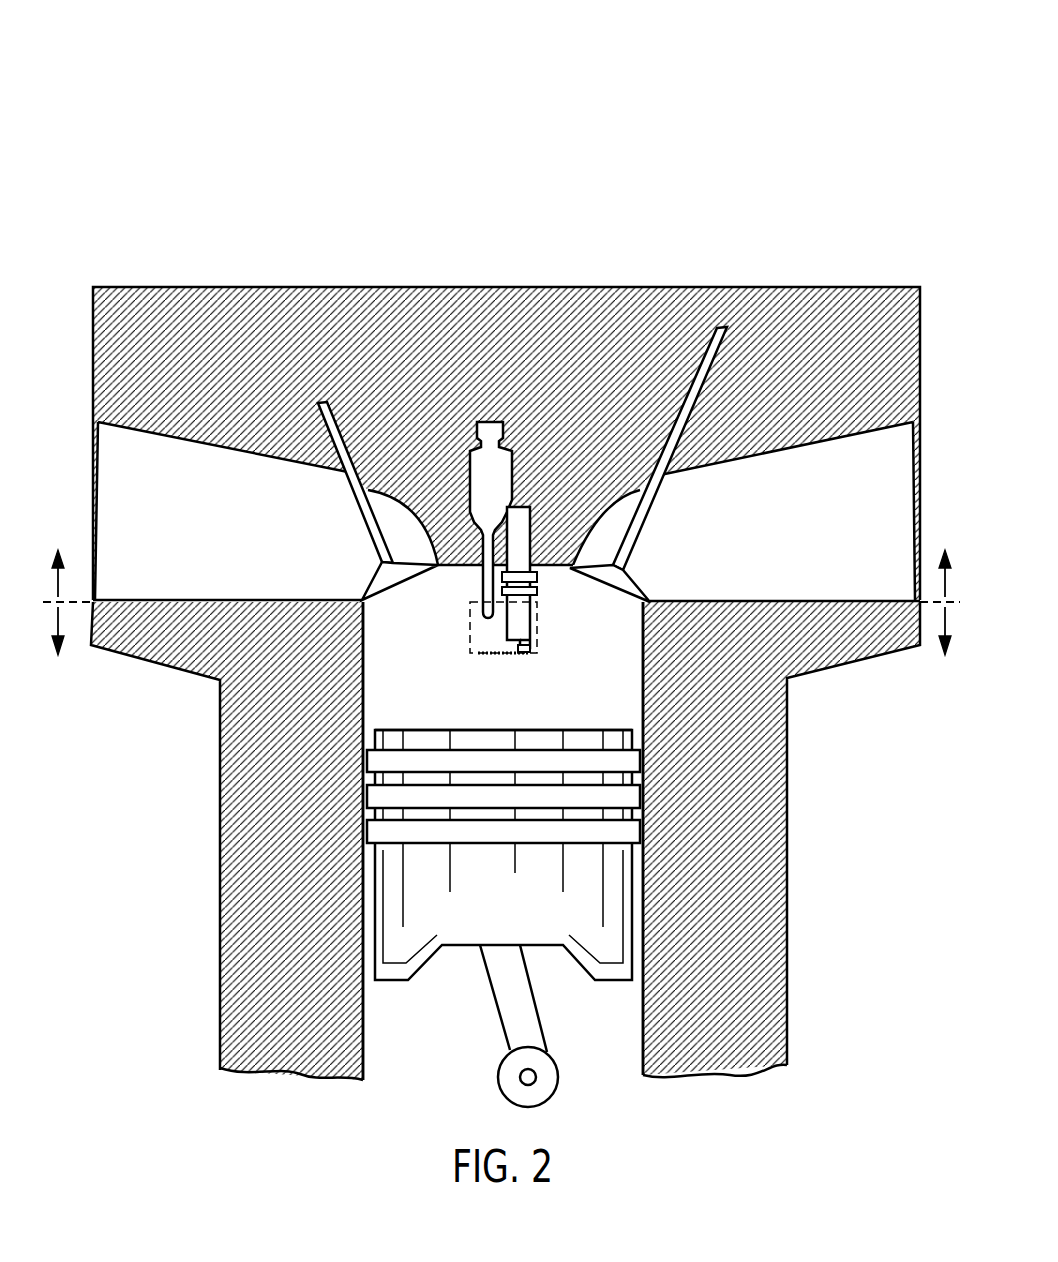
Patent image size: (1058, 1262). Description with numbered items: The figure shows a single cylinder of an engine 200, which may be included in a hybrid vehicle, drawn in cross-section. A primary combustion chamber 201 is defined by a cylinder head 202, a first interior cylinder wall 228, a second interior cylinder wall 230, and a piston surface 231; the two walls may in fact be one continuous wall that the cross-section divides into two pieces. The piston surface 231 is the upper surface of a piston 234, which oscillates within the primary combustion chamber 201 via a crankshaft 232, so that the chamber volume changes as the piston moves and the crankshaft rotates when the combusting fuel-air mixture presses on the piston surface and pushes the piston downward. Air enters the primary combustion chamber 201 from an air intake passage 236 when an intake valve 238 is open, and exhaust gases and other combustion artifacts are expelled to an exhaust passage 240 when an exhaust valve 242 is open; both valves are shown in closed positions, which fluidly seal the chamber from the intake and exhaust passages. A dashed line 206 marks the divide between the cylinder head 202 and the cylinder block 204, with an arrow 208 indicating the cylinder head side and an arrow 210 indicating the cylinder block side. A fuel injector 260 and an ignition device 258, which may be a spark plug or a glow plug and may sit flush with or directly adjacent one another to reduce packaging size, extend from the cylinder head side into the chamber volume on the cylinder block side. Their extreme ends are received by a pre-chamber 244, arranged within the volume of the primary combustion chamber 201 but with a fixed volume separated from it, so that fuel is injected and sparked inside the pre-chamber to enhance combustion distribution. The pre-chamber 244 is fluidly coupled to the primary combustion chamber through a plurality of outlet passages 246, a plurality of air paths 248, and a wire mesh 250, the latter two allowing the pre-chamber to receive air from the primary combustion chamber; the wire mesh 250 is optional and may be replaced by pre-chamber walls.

The engine 200 is at (834, 33).
The primary combustion chamber 201 is at (519, 720).
The cylinder head 202 is at (176, 287).
The cylinder block 204 is at (220, 857).
The dashed line 206 is at (80, 605).
The arrow 208 is at (60, 593).
The arrow 210 is at (60, 615).
The first interior cylinder wall 228 is at (365, 1070).
The second interior cylinder wall 230 is at (643, 1070).
The piston surface 231 is at (437, 728).
The crankshaft 232 is at (498, 1078).
The piston 234 is at (463, 947).
The air intake passage 236 is at (831, 547).
The intake valve 238 is at (641, 530).
The exhaust passage 240 is at (259, 537).
The exhaust valve 242 is at (356, 500).
The pre-chamber 244 is at (470, 653).
The plurality of outlet passages 246 is at (540, 634).
The plurality of air paths 248 is at (468, 608).
The wire mesh 250 is at (518, 652).
The ignition device 258 is at (531, 507).
The fuel injector 260 is at (474, 420).